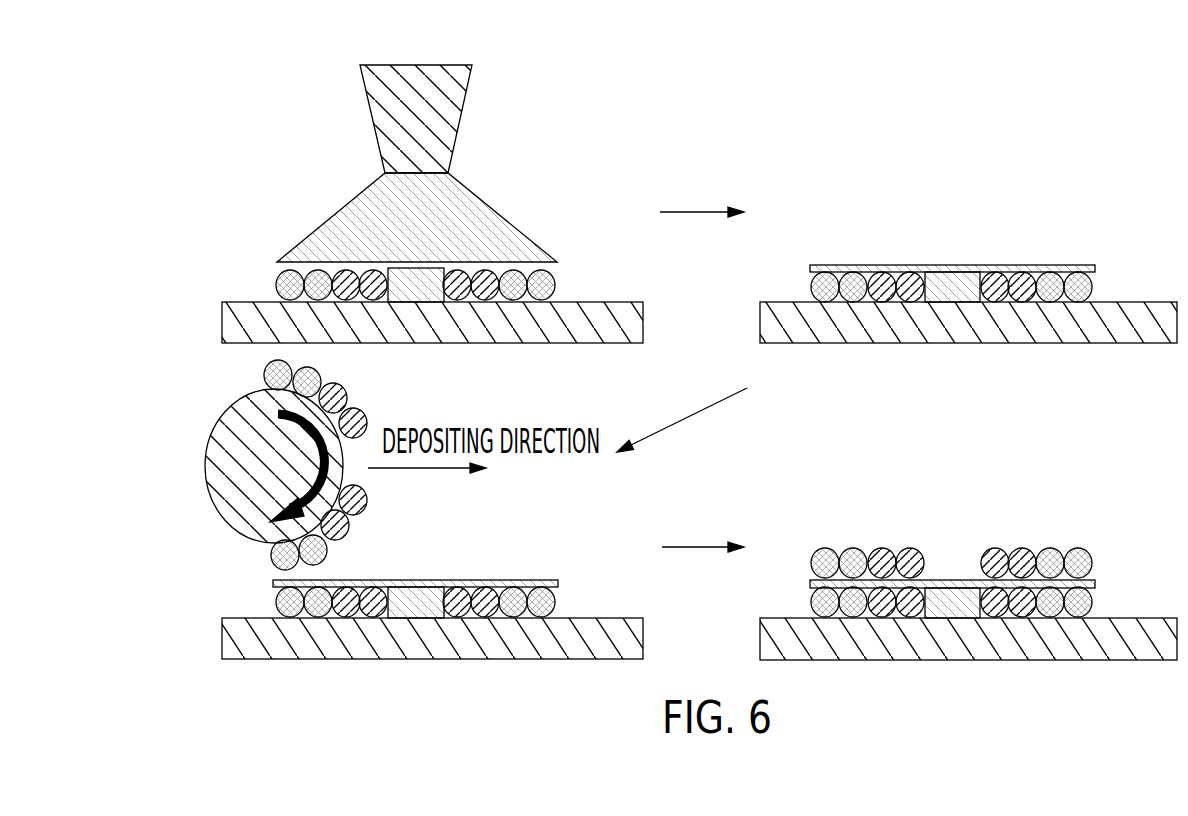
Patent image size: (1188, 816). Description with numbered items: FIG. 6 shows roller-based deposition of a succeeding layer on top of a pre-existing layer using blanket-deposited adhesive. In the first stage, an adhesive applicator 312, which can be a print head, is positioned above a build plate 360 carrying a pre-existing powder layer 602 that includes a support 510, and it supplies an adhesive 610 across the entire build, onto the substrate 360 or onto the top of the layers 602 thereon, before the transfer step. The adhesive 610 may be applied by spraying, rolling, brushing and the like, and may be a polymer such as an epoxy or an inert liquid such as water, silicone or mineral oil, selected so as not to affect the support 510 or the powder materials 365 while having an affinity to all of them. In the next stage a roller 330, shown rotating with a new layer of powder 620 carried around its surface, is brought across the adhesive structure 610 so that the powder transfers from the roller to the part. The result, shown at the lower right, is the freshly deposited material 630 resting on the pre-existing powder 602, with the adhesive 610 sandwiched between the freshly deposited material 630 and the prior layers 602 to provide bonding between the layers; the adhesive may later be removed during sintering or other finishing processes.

The adhesive applicator 312 is at (447, 132).
The pre-existing powder layer 602 is at (551, 291).
The support 510 is at (415, 295).
The roller 330 is at (228, 422).
The new layer of powder 620 is at (349, 531).
The build plate 360 is at (600, 628).
The adhesive 610 is at (969, 265).
The powder materials 365 is at (862, 531).
The freshly deposited material 630 is at (1083, 572).